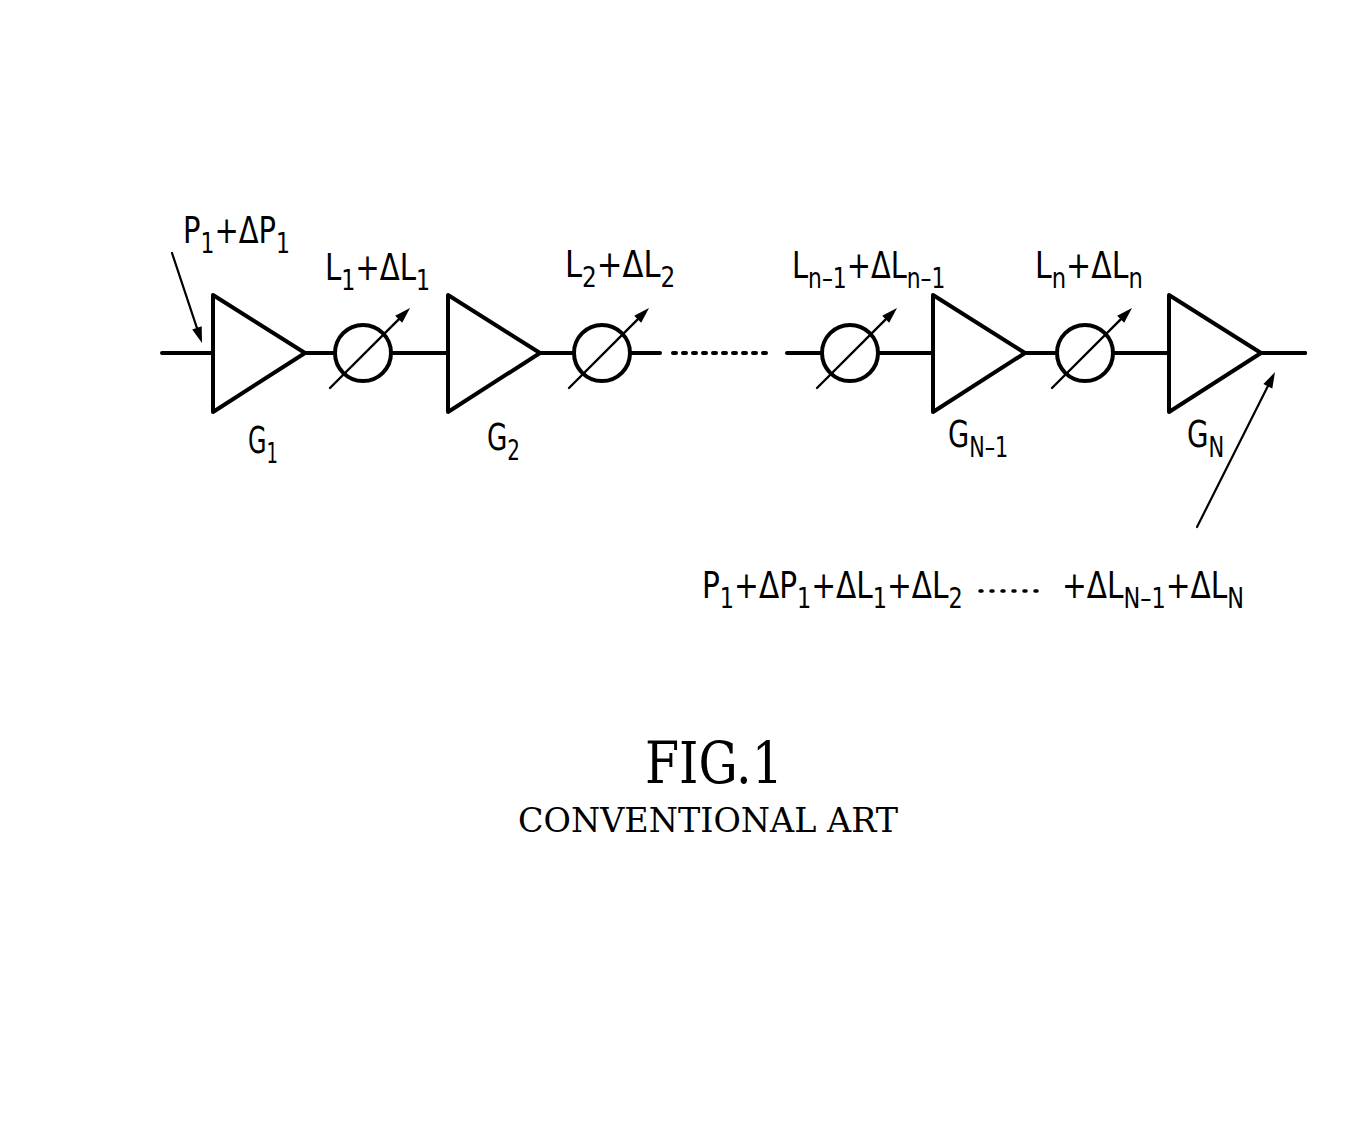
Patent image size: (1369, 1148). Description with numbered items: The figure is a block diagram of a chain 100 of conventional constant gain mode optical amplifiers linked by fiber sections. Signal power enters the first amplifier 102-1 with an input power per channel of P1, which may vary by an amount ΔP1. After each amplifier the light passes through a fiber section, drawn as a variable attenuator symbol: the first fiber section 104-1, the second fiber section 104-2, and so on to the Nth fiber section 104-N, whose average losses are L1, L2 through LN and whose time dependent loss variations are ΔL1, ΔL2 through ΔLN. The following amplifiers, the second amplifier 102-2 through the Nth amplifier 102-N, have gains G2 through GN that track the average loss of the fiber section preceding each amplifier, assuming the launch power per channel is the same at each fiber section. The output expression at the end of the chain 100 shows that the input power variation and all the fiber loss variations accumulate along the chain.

The chain of optical amplifiers 100 is at (733, 236).
The first amplifier 102-1 is at (181, 366).
The second optical amplifier 102-2 is at (490, 292).
The Nth optical amplifier 102-N is at (1212, 300).
The first fiber section 104-1 is at (385, 402).
The second fiber section 104-2 is at (588, 417).
The Nth fiber section 104-N is at (1304, 299).